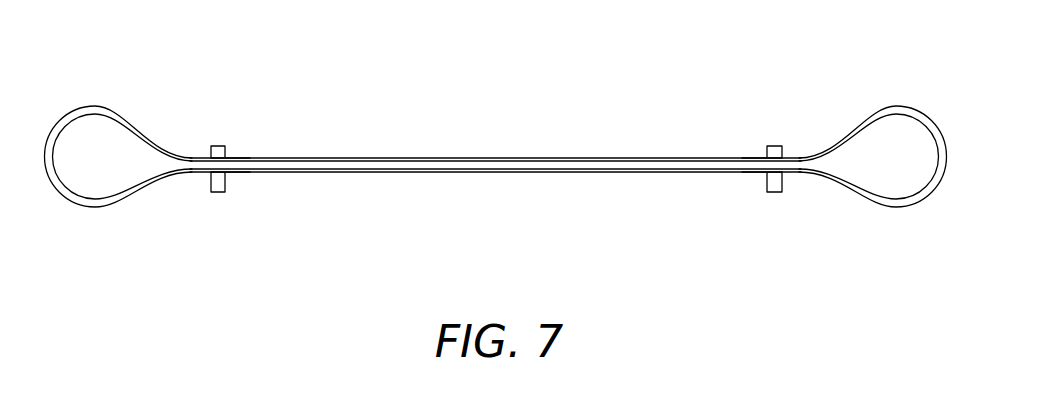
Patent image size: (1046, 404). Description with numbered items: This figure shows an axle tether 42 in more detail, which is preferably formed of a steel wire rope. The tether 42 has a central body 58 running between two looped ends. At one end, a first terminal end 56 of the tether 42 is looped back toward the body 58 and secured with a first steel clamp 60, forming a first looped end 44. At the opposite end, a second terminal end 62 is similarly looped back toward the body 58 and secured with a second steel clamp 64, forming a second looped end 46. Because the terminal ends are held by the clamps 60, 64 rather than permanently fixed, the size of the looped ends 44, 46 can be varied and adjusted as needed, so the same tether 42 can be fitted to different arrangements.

The tether 42 is at (495, 202).
The first looped end 44 is at (878, 206).
The second looped end 46 is at (93, 206).
The first terminal end 56 is at (753, 172).
The body 58 is at (628, 172).
The first steel clamp 60 is at (774, 146).
The second terminal end 62 is at (242, 172).
The second steel clamp 64 is at (215, 146).